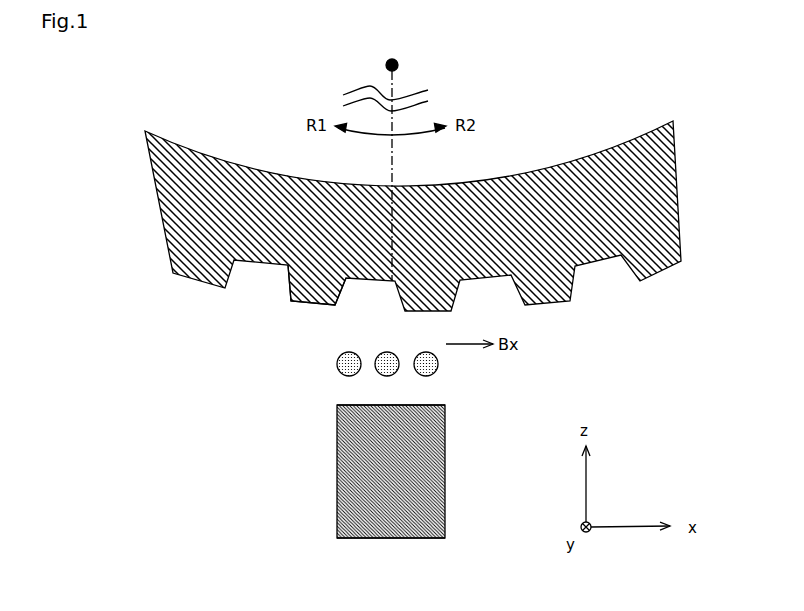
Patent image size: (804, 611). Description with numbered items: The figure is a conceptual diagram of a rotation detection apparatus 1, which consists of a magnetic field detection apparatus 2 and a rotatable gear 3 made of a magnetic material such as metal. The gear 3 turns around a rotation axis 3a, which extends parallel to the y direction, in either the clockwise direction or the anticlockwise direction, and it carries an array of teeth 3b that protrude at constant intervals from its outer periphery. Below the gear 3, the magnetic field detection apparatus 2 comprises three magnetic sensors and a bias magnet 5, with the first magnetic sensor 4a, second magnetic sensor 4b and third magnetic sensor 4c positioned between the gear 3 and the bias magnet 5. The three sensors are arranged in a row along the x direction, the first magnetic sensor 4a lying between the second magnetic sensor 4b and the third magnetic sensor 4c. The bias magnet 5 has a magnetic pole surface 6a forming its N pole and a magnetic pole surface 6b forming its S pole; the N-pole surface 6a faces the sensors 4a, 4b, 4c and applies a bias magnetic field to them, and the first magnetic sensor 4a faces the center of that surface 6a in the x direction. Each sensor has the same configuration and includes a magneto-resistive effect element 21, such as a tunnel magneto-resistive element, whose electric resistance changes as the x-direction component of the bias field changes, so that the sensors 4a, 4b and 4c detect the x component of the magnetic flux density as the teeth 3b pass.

The rotation detection apparatus 1 is at (570, 97).
The magnetic field detection apparatus 2 is at (478, 400).
The gear 3 is at (487, 150).
The rotation axis 3a is at (390, 54).
The teeth 3b is at (282, 280).
The first magnetic sensor 4a is at (378, 344).
The second magnetic sensor 4b is at (340, 344).
The third magnetic sensor 4c is at (418, 344).
The bias magnet 5 is at (435, 462).
The magnetic pole surface (N pole) 6a is at (340, 398).
The magnetic pole surface (S pole) 6b is at (345, 530).
The magneto-resistive effect element 21 is at (343, 360).